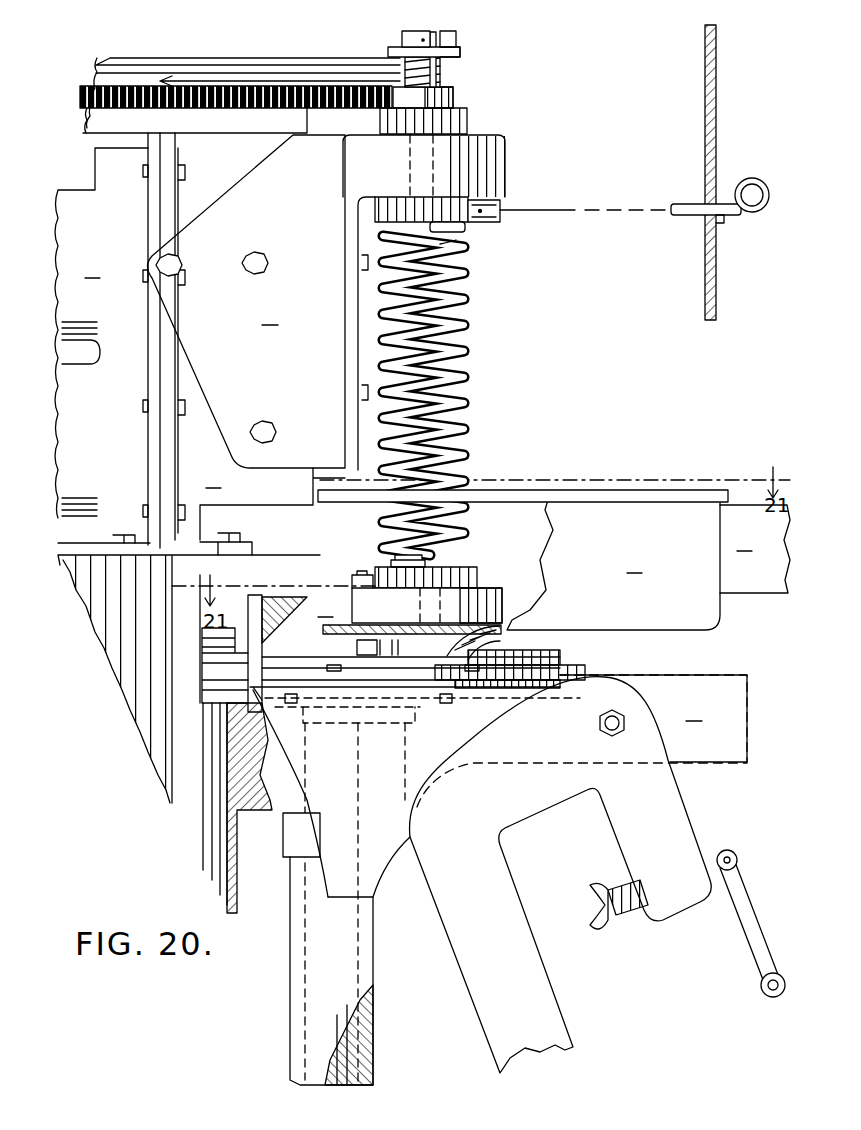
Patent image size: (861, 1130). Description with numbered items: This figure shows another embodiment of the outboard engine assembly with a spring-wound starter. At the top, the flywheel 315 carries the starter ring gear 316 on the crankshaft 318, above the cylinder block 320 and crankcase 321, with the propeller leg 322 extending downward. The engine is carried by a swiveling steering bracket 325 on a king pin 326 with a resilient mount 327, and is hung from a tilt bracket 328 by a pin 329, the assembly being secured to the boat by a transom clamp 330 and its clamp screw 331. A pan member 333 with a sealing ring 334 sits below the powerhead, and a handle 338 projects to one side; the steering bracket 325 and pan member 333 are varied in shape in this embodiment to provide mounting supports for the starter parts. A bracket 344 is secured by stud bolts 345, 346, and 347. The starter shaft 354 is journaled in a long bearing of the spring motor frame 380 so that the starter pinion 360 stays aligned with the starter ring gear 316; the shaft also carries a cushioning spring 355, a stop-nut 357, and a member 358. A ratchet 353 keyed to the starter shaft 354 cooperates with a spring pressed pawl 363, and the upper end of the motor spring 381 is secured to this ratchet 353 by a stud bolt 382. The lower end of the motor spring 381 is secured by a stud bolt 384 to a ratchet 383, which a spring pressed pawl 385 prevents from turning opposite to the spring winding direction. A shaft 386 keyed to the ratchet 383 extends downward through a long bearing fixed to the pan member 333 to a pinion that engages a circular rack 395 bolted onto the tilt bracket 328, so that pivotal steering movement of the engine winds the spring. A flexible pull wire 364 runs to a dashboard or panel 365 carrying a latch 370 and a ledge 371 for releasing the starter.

The flywheel 315 is at (106, 56).
The starter ring gear 316 is at (88, 103).
The crankshaft 318 is at (151, 138).
The cylinder block 320 is at (102, 345).
The crankcase 321 is at (244, 340).
The propeller leg 322 is at (106, 674).
The swiveling steering bracket 325 is at (270, 815).
The king pin 326 is at (330, 1085).
The resilient mount 327 is at (380, 643).
The tilt bracket 328 is at (653, 718).
The pin 329 is at (598, 724).
The transom clamp 330 is at (442, 922).
The clamp screw 331 is at (636, 914).
The pan member 333 is at (613, 561).
The sealing ring 334 is at (608, 496).
The handle 338 is at (755, 549).
The bracket 344 is at (247, 301).
The stud bolt 345 is at (180, 268).
The stud bolt 346 is at (267, 260).
The stud bolt 347 is at (262, 424).
The ratchet 353 is at (466, 228).
The starter shaft 354 is at (398, 40).
The cushioning spring 355 is at (458, 38).
The stop-nut 357 is at (461, 54).
The member 358 is at (446, 76).
The starter pinion 360 is at (468, 124).
The spring pressed pawl 363 is at (502, 209).
The flexible pull wire 364 is at (580, 209).
The dashboard or panel 365 is at (718, 300).
The latch 370 is at (690, 206).
The ledge 371 is at (700, 219).
The spring motor frame 380 is at (345, 343).
The motor spring 381 is at (470, 398).
The stud bolt 382 is at (456, 242).
The ratchet 383 is at (480, 582).
The stud bolt 384 is at (396, 562).
The spring pressed pawl 385 is at (361, 590).
The shaft 386 is at (430, 637).
The circular rack 395 is at (558, 660).